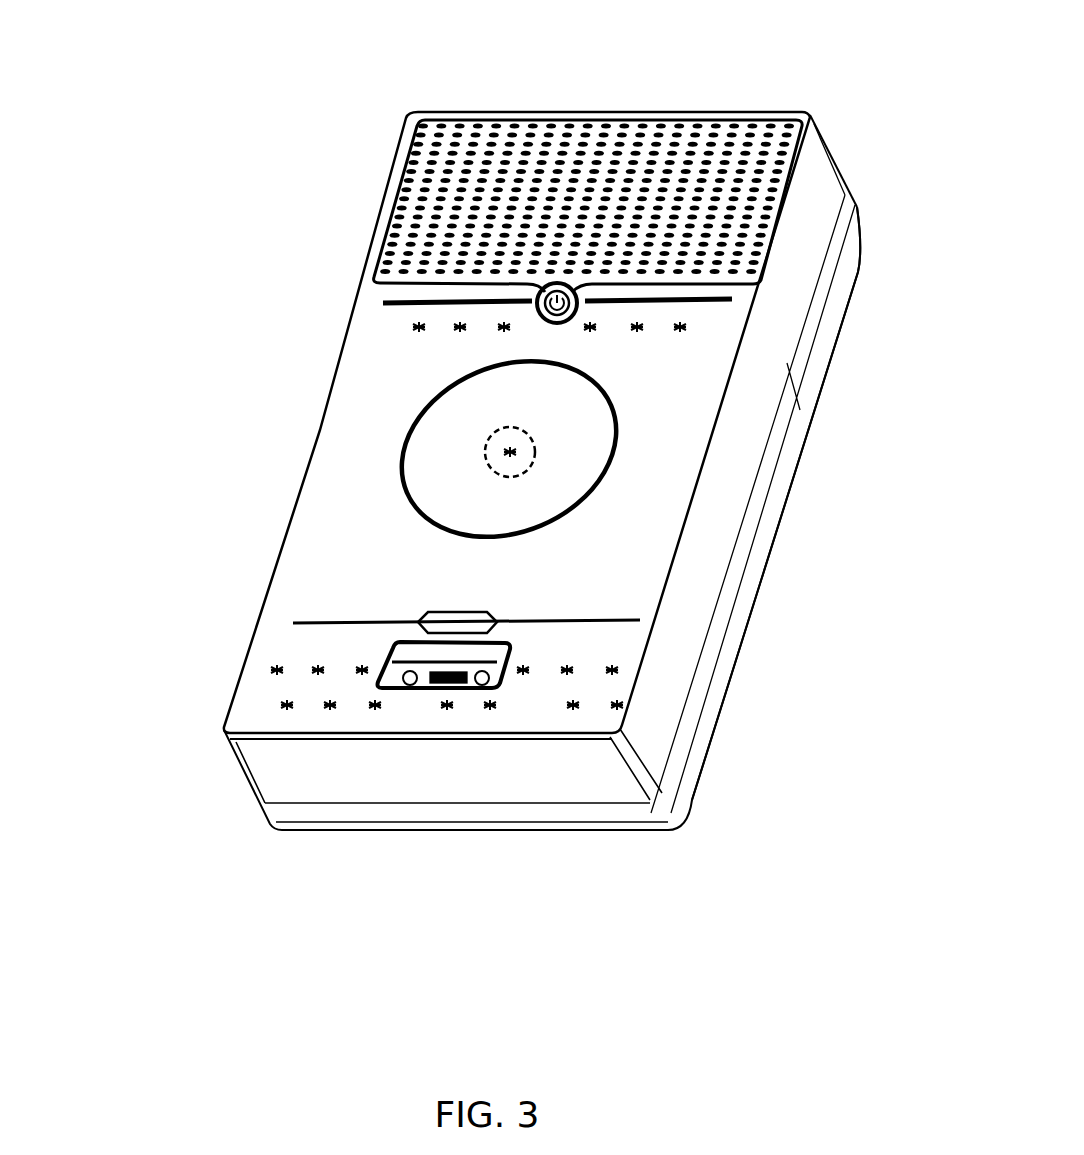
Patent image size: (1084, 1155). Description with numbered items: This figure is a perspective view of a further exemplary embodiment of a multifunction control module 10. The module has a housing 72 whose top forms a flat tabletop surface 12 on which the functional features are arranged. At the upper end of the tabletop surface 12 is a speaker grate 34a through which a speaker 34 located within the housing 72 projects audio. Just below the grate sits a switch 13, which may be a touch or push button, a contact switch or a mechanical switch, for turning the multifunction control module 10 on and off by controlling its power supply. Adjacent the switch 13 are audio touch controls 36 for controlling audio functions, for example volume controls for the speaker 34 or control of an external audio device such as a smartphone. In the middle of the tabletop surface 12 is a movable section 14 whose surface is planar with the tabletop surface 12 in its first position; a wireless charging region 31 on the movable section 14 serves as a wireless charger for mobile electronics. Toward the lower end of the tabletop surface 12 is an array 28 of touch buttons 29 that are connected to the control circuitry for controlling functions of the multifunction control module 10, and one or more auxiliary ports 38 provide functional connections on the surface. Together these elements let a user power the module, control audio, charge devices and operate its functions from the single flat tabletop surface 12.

The multifunction control module 10 is at (705, 88).
The flat tabletop surface 12 is at (348, 533).
The switch 13 is at (537, 306).
The movable section 14 is at (488, 501).
The array of touch buttons 28 is at (604, 657).
The touch buttons 29 is at (290, 705).
The wireless charging region 31 is at (557, 437).
The speaker 34 is at (497, 205).
The speaker grate 34a is at (492, 133).
The audio touch controls 36 is at (708, 320).
The auxiliary ports 38 is at (448, 702).
The housing 72 is at (863, 193).